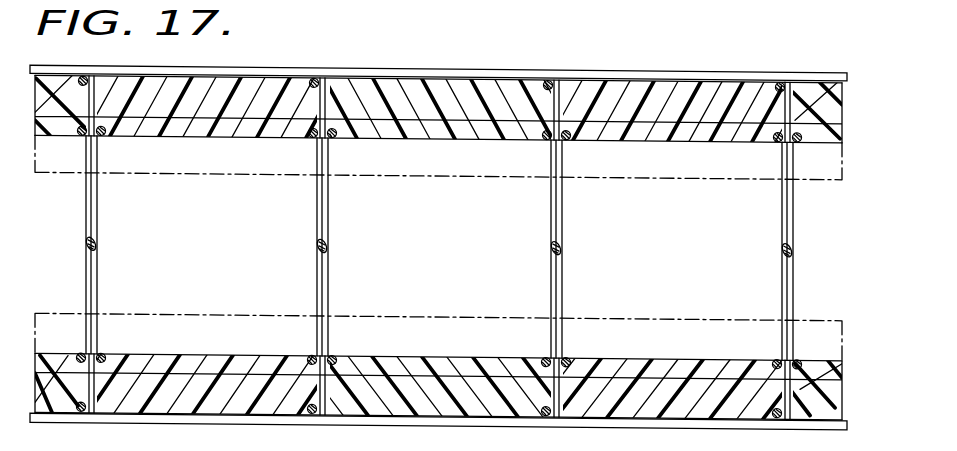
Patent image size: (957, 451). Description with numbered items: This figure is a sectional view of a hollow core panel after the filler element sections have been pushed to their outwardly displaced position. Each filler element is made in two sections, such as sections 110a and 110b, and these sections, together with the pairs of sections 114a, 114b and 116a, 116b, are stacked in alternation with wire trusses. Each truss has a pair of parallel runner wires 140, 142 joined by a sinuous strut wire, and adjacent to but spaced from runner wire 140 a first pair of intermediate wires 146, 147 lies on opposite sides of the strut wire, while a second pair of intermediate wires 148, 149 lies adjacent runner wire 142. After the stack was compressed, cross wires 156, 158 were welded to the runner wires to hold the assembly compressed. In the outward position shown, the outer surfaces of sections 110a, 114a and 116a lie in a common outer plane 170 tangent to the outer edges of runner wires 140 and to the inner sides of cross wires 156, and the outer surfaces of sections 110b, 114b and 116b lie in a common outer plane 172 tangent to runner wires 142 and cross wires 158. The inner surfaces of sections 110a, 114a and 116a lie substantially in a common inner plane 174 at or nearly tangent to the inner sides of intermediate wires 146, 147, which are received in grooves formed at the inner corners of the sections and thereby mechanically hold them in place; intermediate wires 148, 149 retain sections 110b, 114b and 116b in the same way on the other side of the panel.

The filler element section 110a is at (153, 137).
The filler element section 110b is at (197, 353).
The filler element section 114a is at (397, 137).
The filler element section 114b is at (433, 355).
The filler element section 116a is at (650, 135).
The filler element section 116b is at (635, 362).
The runner wire 140 is at (320, 72).
The runner wire 142 is at (313, 415).
The intermediate wire 146 is at (313, 137).
The intermediate wire 147 is at (333, 137).
The intermediate wire 148 is at (312, 356).
The intermediate wire 149 is at (335, 356).
The cross wire 156 is at (357, 70).
The cross wire 158 is at (398, 421).
The outer plane 170 is at (207, 72).
The outer plane 172 is at (242, 413).
The inner plane 174 is at (230, 136).